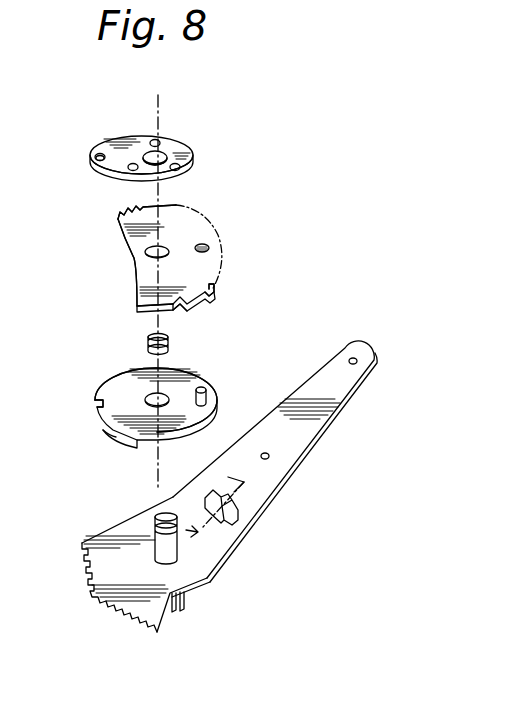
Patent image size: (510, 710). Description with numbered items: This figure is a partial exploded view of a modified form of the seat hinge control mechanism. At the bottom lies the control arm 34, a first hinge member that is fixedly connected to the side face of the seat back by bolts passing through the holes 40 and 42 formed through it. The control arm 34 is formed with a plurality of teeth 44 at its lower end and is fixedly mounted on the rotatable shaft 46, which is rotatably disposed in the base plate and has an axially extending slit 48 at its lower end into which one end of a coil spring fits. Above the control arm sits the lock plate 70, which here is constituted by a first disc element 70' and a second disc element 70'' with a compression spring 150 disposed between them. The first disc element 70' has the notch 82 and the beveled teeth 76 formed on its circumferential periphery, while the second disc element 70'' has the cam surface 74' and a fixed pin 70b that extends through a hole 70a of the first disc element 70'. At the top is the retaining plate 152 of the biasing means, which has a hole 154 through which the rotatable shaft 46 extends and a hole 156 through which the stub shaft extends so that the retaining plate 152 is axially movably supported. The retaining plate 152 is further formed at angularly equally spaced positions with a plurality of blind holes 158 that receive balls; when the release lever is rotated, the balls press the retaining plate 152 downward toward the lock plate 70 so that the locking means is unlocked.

The retaining plate 152 is at (131, 136).
The hole 154 is at (166, 166).
The hole 156 is at (99, 153).
The blind holes 158 is at (175, 164).
The lock plate 70 is at (127, 318).
The first disc element 70' is at (153, 258).
The second disc element 70'' is at (151, 360).
The hole 70a is at (209, 248).
The fixed pin 70b is at (208, 392).
The teeth 76 is at (216, 288).
The notch 82 is at (175, 309).
The compression spring 150 is at (170, 347).
The cam surface 74' is at (106, 433).
The control arm 34 is at (337, 398).
The hole 40 is at (356, 359).
The hole 42 is at (268, 459).
The teeth 44 is at (100, 603).
The rotatable shaft 46 is at (155, 540).
The slit 48 is at (185, 604).